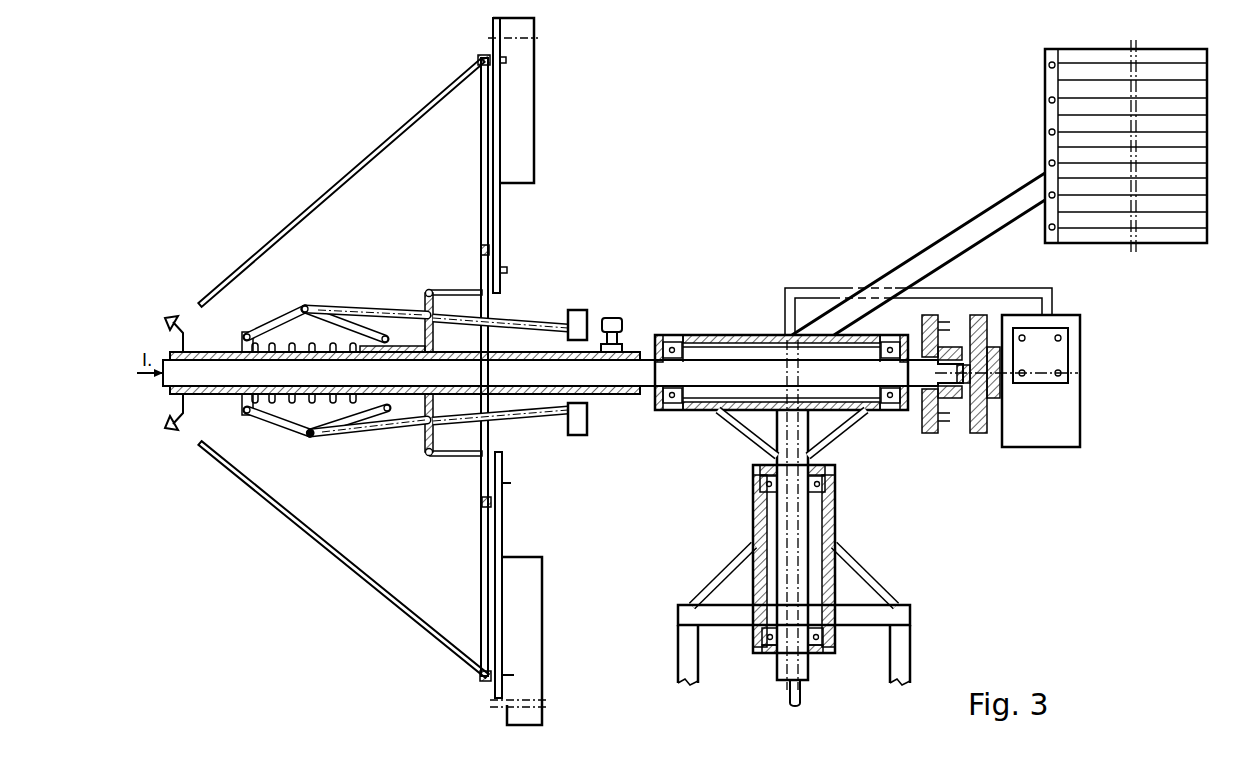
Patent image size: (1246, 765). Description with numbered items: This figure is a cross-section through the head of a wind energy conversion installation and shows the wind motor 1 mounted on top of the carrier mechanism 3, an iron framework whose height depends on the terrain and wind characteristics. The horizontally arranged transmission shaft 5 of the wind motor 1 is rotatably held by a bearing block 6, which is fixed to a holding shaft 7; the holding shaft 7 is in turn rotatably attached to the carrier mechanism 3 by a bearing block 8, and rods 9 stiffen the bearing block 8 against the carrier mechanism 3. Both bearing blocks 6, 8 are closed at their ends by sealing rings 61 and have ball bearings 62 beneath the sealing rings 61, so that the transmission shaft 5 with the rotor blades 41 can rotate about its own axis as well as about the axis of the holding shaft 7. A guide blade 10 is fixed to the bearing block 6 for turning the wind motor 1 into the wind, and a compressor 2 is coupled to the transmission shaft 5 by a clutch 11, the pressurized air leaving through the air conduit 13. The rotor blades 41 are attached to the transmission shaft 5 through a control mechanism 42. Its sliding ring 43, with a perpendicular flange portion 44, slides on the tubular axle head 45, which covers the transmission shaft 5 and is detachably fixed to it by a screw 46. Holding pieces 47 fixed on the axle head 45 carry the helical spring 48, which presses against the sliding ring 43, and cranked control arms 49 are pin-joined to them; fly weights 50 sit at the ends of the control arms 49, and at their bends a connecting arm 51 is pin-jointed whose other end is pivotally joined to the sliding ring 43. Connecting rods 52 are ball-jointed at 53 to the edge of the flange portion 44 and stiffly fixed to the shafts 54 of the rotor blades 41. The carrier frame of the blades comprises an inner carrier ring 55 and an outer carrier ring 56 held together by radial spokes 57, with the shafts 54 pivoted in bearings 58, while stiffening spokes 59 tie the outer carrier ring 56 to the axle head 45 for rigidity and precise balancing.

The wind motor 1 is at (290, 178).
The compressor 2 is at (1072, 412).
The carrier mechanism 3 is at (680, 596).
The transmission shaft 5 is at (602, 378).
The bearing block 6 is at (737, 333).
The holding shaft 7 is at (787, 672).
The bearing block 8 is at (840, 512).
The rods 9 is at (738, 420).
The guide blade 10 is at (1148, 235).
The clutch 11 is at (965, 447).
The air conduit 13 is at (798, 697).
The rotor blades 41 is at (523, 67).
The control mechanism 42 is at (272, 310).
The sliding ring 43 is at (408, 346).
The flange portion 44 is at (433, 338).
The tubular axle head 45 is at (529, 357).
The screw 46 is at (612, 318).
The holding pieces 47 is at (243, 402).
The helical spring 48 is at (283, 406).
The cranked control arms 49 is at (340, 312).
The fly weights 50 is at (578, 322).
The connecting arm 51 is at (362, 330).
The connecting rods 52 is at (463, 290).
The ball joint 53 is at (428, 290).
The shafts of rotor blades 54 is at (497, 112).
The inner carrier ring 55 is at (490, 250).
The outer carrier ring 56 is at (478, 60).
The radial spokes 57 is at (481, 155).
The bearings 58 is at (482, 48).
The stiffening spokes 59 is at (375, 160).
The sealing rings 61 is at (660, 402).
The ball bearings 62 is at (672, 343).